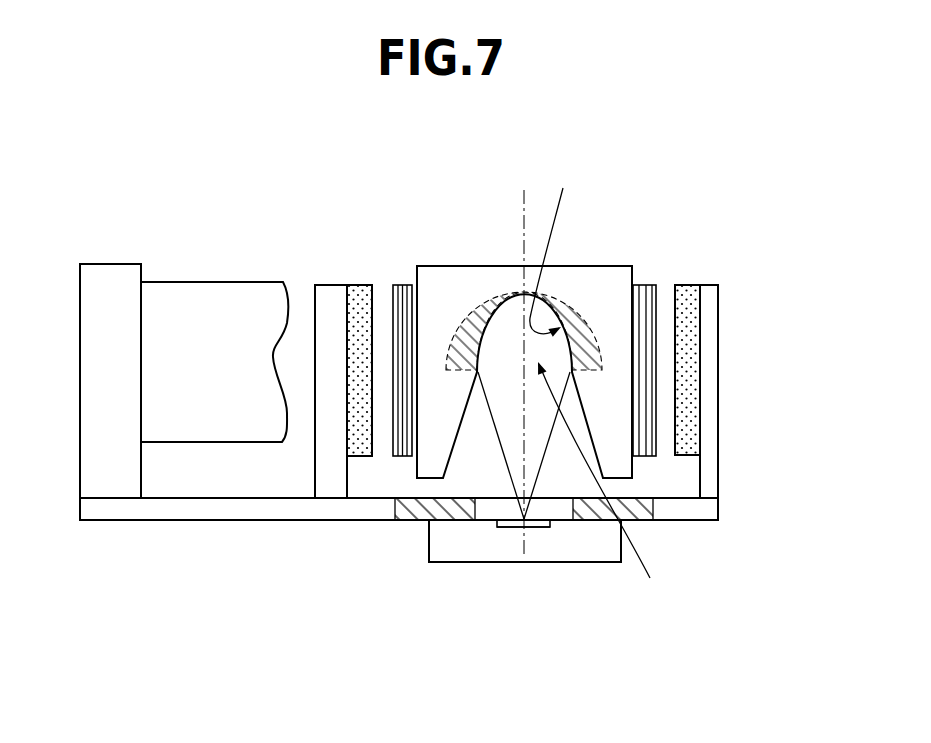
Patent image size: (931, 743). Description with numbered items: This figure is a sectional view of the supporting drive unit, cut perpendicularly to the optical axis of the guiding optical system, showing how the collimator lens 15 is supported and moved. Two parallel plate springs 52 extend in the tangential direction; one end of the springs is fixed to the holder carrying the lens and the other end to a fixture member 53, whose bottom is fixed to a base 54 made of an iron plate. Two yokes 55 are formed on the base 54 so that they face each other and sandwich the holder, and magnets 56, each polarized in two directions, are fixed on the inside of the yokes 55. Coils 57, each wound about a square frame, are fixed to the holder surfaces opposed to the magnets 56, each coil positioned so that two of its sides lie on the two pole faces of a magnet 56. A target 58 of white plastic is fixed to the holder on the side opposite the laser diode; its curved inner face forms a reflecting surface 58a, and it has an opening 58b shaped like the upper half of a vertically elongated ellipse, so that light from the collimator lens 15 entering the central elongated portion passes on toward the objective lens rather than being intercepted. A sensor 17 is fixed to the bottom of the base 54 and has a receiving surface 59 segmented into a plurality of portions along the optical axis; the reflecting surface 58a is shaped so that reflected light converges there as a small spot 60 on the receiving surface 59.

The collimator lens 15 is at (487, 303).
The sensor 17 is at (442, 553).
The plate springs 52 is at (232, 297).
The fixture member 53 is at (109, 282).
The base 54 is at (132, 513).
The yokes 55 is at (327, 482).
The magnets 56 is at (362, 448).
The coils 57 is at (395, 452).
The target 58 is at (595, 266).
The reflecting surface 58a is at (561, 248).
The opening 58b is at (611, 485).
The receiving surface 59 is at (540, 530).
The spot 60 is at (525, 523).